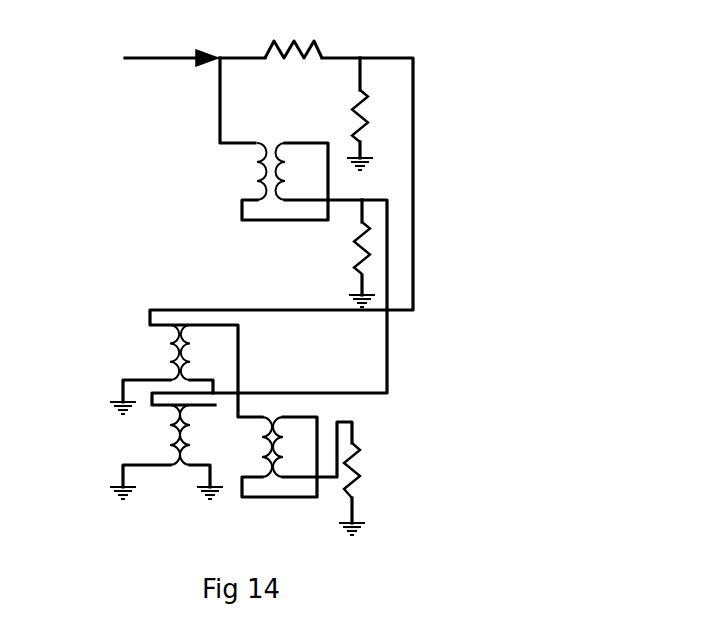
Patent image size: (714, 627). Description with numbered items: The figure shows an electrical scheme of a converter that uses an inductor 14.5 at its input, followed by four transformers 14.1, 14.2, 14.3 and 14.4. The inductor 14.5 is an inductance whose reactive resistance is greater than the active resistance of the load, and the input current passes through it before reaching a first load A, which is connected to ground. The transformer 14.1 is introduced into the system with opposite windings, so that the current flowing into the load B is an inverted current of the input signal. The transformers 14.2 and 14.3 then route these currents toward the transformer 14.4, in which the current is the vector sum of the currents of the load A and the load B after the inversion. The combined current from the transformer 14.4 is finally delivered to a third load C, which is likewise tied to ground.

The transformer 14.1 is at (235, 176).
The transformer 14.2 is at (146, 367).
The transformer 14.3 is at (155, 454).
The transformer 14.4 is at (268, 488).
The inductor 14.5 is at (309, 30).
The load A is at (342, 116).
The load B is at (343, 248).
The load C is at (368, 470).